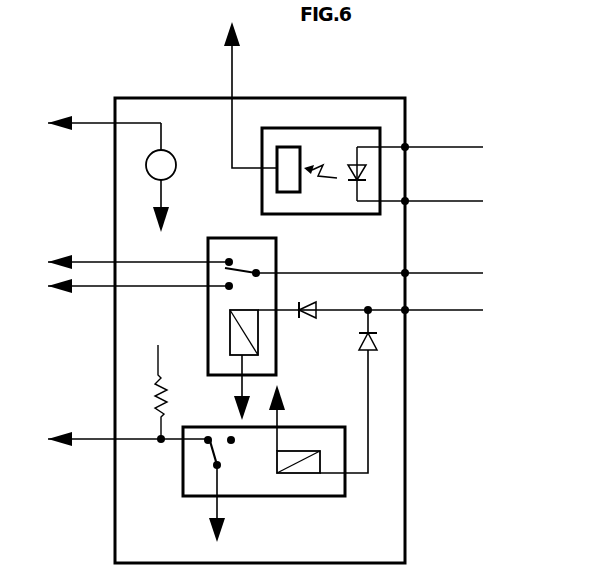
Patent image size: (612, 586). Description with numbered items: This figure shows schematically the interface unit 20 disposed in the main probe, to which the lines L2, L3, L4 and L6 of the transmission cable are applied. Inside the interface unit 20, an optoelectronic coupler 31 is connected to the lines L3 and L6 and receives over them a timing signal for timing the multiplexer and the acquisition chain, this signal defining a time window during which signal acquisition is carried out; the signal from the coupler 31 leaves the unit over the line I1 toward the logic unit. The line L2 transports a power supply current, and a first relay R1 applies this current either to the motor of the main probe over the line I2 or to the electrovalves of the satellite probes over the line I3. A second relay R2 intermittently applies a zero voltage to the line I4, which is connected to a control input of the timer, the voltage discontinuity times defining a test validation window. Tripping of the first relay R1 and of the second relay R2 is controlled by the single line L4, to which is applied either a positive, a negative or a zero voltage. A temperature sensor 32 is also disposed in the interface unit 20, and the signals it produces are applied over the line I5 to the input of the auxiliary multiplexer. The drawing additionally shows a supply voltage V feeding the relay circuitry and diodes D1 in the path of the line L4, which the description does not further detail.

The interface unit 20 is at (419, 86).
The optoelectronic coupler 31 is at (310, 214).
The temperature sensor 32 is at (171, 156).
The first relay R1 is at (215, 232).
The second relay R2 is at (336, 504).
The line l1 I1 is at (240, 66).
The line l2 I2 is at (101, 260).
The line l3 I3 is at (101, 289).
The line l4 I4 is at (101, 437).
The line l5 I5 is at (100, 121).
The line L2 is at (485, 264).
The line L3 is at (485, 136).
The line L4 is at (485, 301).
The line L6 is at (485, 191).
The supply voltage V+ V is at (170, 387).
The diodes D1 is at (390, 387).